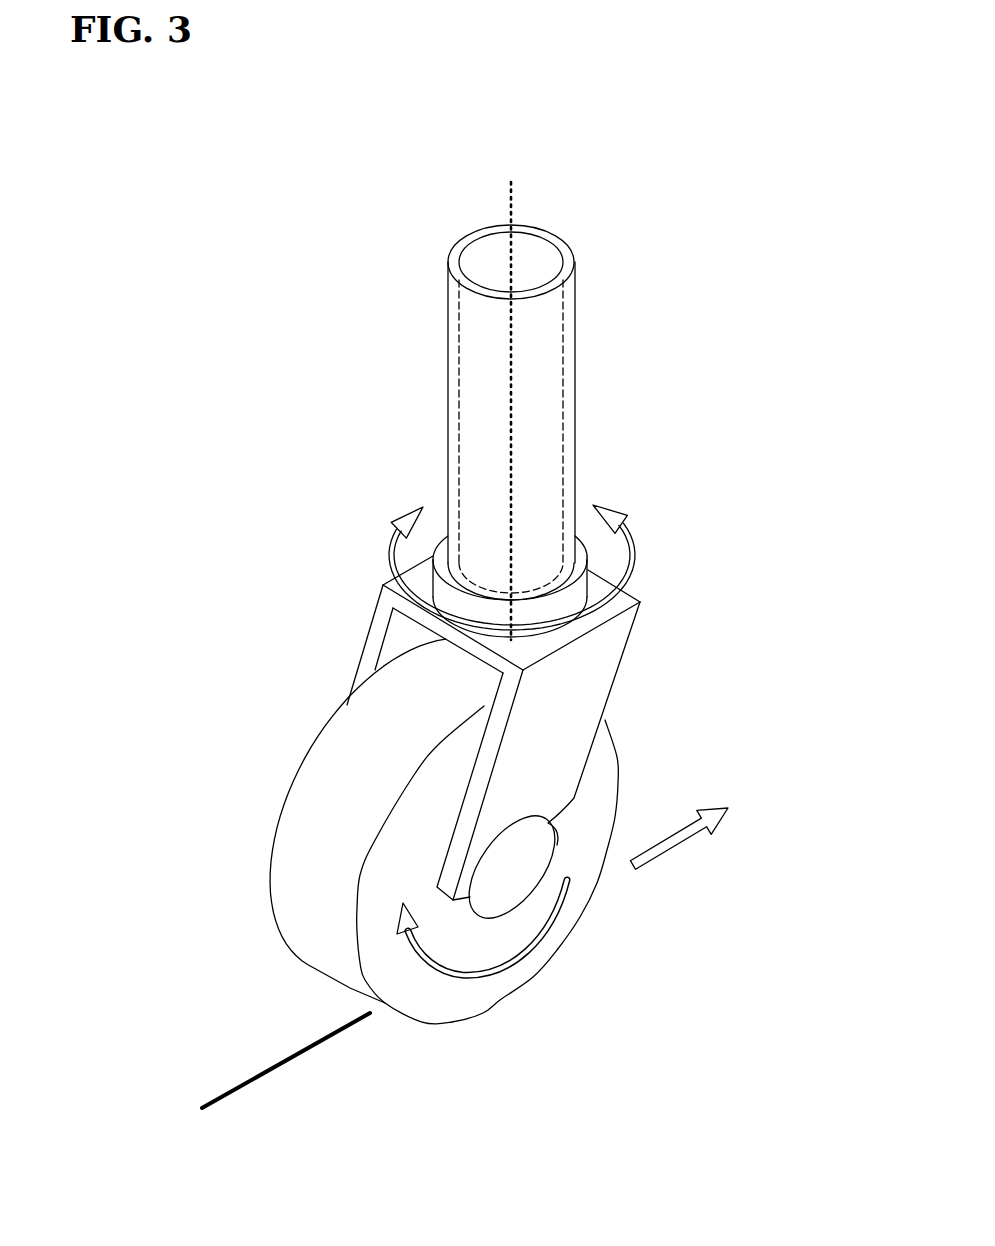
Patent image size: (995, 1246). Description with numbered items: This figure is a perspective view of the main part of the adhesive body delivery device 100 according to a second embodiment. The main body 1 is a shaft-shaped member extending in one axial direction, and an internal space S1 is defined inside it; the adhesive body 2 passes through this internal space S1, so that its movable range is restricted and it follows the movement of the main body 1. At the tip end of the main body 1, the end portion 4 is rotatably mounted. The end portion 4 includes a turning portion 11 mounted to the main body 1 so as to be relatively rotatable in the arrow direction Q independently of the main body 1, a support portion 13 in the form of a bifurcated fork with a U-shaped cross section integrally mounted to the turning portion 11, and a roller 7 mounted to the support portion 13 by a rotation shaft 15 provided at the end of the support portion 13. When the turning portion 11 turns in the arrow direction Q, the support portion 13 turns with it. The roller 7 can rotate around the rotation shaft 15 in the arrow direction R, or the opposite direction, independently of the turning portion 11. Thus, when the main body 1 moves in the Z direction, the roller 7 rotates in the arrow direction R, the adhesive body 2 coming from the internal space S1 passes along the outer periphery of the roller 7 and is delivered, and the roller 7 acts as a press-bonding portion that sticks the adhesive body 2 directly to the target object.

The adhesive body delivery device 100 is at (647, 277).
The main body 1 is at (577, 347).
The adhesive body 2 is at (511, 333).
The end portion 4 is at (347, 597).
The roller 7 is at (467, 997).
The turning portion 11 is at (590, 548).
The support portion 13 is at (598, 680).
The rotation shaft 15 is at (512, 882).
The internal space S1 is at (553, 405).
The arrow direction Q is at (496, 567).
The arrow direction R is at (479, 923).
The Z direction Z is at (690, 827).